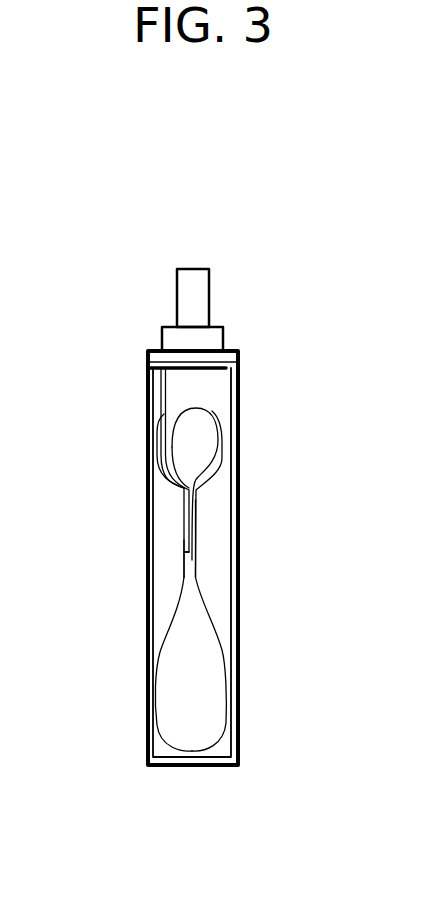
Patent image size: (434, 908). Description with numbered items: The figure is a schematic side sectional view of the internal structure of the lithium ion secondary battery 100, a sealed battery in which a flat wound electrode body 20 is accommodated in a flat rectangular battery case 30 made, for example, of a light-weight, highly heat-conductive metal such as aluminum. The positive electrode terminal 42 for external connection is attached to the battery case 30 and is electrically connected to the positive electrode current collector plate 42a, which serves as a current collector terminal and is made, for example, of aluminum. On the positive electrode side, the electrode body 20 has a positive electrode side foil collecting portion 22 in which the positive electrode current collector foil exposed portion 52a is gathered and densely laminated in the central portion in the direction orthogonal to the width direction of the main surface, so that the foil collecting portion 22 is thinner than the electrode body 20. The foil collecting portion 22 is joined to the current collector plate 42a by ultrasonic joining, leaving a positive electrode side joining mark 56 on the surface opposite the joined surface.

The lithium ion secondary battery 100 is at (278, 257).
The battery case 30 is at (240, 713).
The positive electrode terminal 42 is at (175, 283).
The positive electrode current collector plate 42a is at (187, 508).
The electrode body 20 is at (212, 495).
The positive electrode side foil collecting portion 22 is at (190, 558).
The positive electrode side joining mark 56 is at (200, 533).
The positive electrode current collector foil exposed portion 52a is at (215, 623).